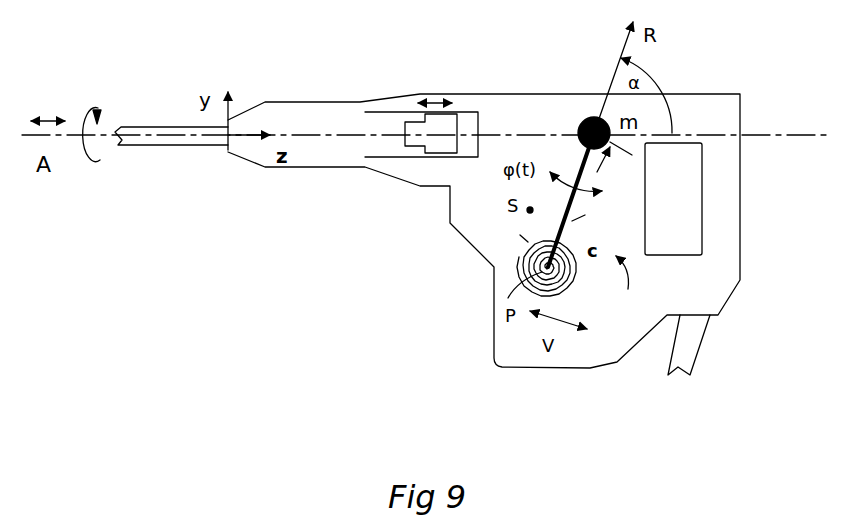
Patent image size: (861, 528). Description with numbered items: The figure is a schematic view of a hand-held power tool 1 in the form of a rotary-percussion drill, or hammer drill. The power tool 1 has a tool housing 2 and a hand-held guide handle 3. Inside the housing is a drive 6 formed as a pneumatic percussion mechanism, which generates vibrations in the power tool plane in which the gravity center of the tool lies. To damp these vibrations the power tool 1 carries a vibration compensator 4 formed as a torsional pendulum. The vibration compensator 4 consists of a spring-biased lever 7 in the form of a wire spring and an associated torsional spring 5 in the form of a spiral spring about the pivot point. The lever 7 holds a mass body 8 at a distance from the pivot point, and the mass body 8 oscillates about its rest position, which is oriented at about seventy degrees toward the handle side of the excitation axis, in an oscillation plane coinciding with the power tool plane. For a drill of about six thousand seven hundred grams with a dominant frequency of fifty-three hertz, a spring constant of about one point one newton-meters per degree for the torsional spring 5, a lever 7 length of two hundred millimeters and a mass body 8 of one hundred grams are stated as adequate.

The hand-held power tool 1 is at (373, 245).
The tool housing 2 is at (491, 237).
The hand-held guide handle 3 is at (727, 213).
The vibration compensator 4 is at (626, 285).
The torsional spring 5 is at (570, 276).
The drive 6 is at (470, 121).
The spring-biased lever 7 is at (572, 197).
The mass body 8 is at (580, 125).